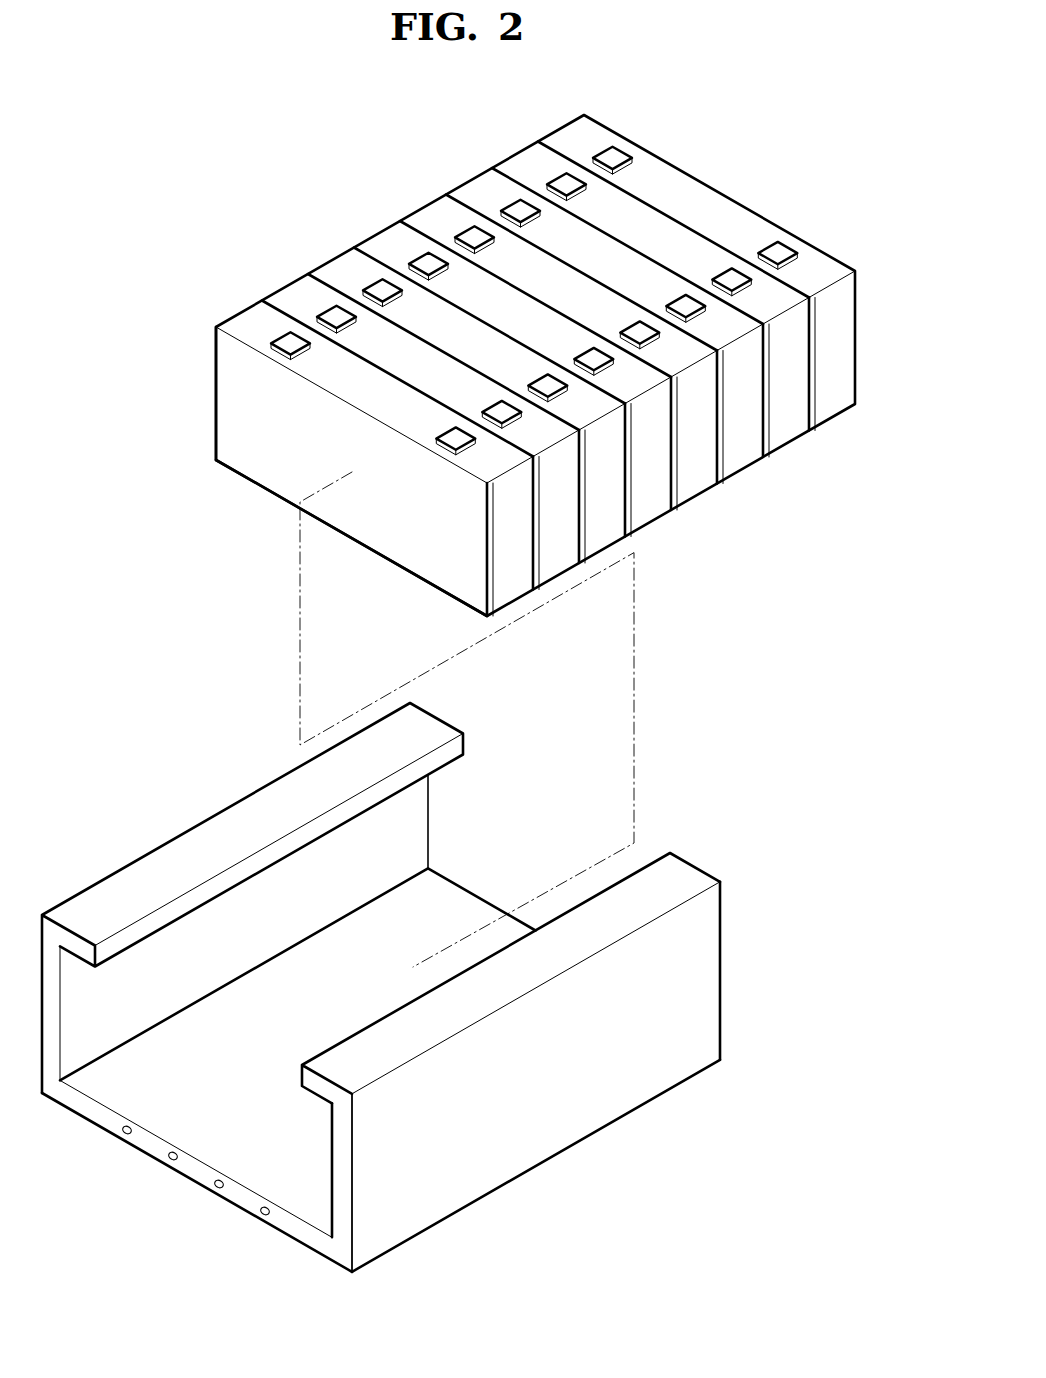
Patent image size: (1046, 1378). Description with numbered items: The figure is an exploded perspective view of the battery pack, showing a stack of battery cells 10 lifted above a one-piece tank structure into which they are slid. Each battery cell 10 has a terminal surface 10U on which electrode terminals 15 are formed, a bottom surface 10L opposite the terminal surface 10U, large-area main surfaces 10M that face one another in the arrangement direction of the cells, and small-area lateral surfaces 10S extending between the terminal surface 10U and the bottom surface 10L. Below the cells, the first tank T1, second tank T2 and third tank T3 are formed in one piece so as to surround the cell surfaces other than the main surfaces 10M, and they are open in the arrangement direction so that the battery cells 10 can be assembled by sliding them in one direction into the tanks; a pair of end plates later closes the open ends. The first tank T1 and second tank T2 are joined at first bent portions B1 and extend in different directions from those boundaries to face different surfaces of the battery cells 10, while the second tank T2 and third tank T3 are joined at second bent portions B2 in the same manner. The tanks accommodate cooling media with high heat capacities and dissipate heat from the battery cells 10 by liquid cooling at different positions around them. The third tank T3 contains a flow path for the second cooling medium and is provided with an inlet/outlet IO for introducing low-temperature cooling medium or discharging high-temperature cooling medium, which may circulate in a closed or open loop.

The battery cell 10 is at (482, 349).
The terminal surface 10U is at (247, 320).
The lateral surface 10S is at (215, 395).
The main surface 10M is at (263, 422).
The bottom surface 10L is at (267, 493).
The electrode terminal 15 is at (618, 152).
The inlet/outlet IO is at (173, 1160).
The first tank T1 is at (317, 1087).
The second tank T2 is at (345, 1177).
The third tank T3 is at (197, 1197).
The first bent portion B1 is at (537, 989).
The second bent portion B2 is at (538, 1165).